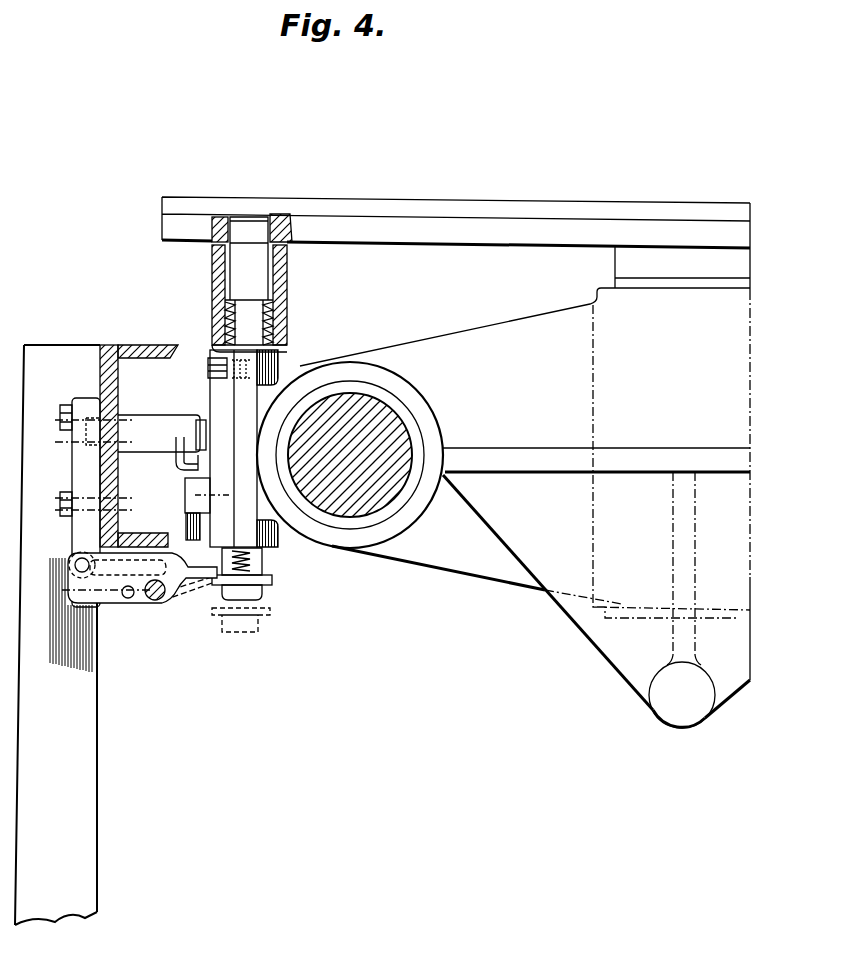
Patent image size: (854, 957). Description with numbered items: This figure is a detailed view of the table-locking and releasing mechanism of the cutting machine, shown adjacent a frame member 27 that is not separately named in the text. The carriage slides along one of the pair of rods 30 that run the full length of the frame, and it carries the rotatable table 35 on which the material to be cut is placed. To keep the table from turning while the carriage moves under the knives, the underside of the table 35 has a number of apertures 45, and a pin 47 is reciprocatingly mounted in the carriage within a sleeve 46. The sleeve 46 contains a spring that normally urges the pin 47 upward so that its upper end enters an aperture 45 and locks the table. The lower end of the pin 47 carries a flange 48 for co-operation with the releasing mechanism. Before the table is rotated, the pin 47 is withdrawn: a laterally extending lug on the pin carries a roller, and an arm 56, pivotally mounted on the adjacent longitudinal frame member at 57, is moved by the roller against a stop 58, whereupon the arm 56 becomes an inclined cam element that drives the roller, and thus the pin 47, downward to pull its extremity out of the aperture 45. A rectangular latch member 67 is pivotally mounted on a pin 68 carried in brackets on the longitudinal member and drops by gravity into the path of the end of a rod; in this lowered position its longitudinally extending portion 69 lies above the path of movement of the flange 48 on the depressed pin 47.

The wall 27 is at (82, 684).
The rod 30 is at (347, 498).
The rotatable table 35 is at (437, 238).
The aperture 45 is at (240, 234).
The sleeve 46 is at (283, 312).
The pin 47 is at (280, 268).
The flange 48 is at (262, 582).
The arm 56 is at (185, 468).
The pivot 57 is at (142, 435).
The stop 58 is at (195, 491).
The latch member 67 is at (140, 568).
The pin 68 is at (75, 565).
The longitudinally extending portion 69 is at (238, 562).